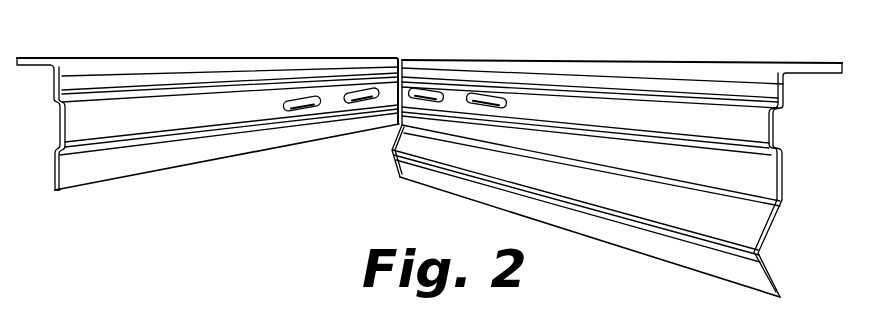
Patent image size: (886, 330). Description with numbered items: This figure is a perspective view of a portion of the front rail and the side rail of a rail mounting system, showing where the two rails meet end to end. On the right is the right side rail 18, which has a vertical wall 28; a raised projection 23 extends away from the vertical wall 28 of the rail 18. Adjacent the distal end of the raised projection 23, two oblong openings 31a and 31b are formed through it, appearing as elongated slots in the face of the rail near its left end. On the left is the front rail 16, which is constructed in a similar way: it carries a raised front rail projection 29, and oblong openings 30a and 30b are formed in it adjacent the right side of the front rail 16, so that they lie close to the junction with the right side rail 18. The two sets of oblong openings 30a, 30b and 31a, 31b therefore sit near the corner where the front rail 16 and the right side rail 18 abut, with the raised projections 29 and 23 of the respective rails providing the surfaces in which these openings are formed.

The front rail 16 is at (224, 66).
The right side rail 18 is at (636, 70).
The raised projection 23 is at (751, 121).
The vertical wall 28 is at (783, 158).
The raised front rail projection 29 is at (80, 118).
The oblong opening 30a is at (303, 104).
The oblong opening 30b is at (363, 99).
The oblong opening 31a is at (491, 97).
The oblong opening 31b is at (420, 88).